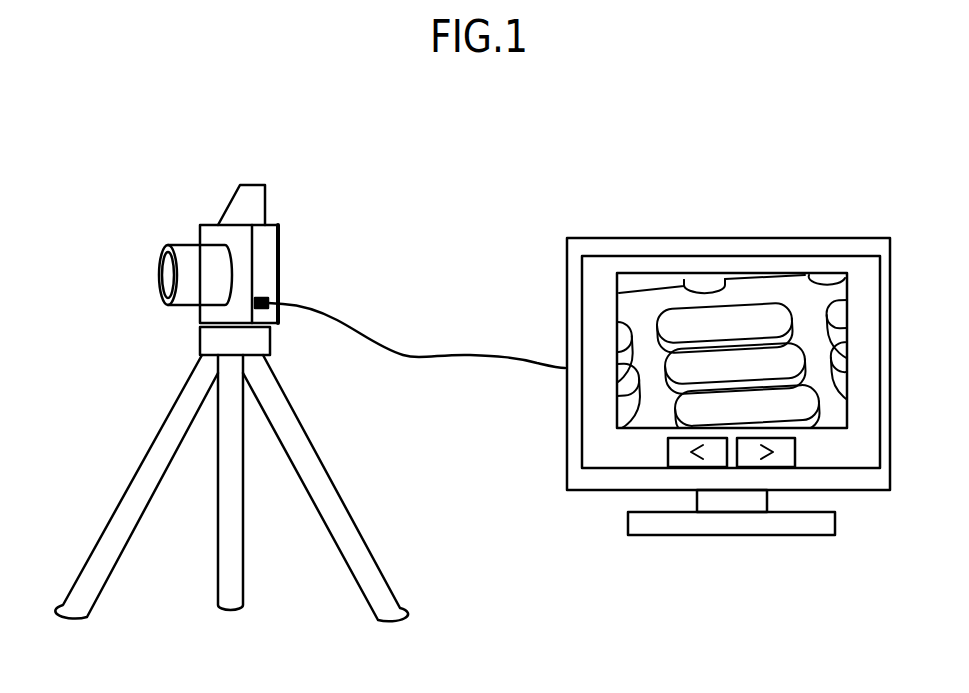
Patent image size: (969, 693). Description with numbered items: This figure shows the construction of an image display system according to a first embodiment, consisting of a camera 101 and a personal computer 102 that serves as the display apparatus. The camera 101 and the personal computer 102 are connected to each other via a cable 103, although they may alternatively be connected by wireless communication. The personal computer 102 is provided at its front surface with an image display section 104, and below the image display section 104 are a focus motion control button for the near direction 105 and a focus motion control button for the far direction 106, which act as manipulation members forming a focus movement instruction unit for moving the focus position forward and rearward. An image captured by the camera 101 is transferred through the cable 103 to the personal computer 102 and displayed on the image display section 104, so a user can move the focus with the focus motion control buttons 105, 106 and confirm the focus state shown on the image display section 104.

The camera 101 is at (279, 187).
The personal computer 102 is at (821, 223).
The cable 103 is at (403, 352).
The image display section 104 is at (643, 263).
The focus motion control button (near direction) 105 is at (680, 458).
The focus motion control button (far direction) 106 is at (783, 458).